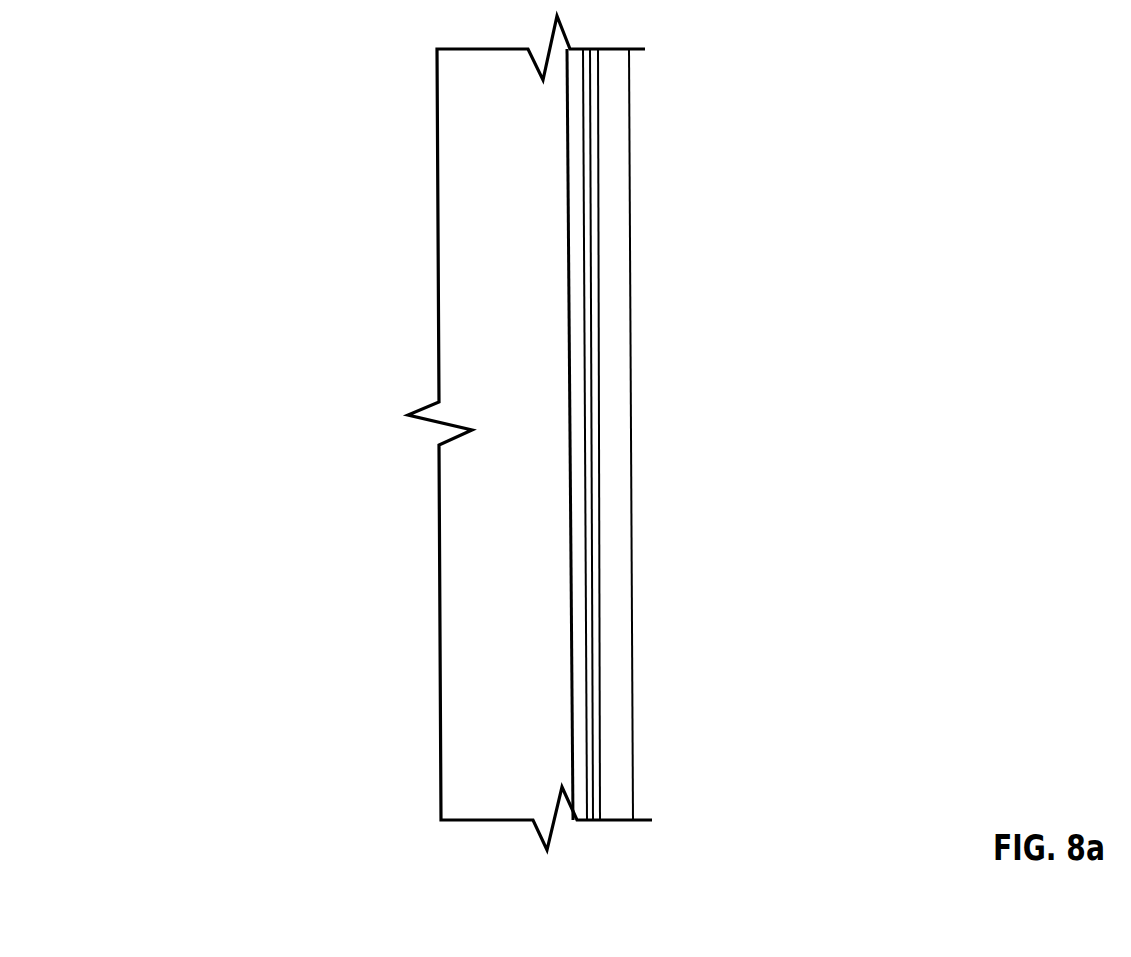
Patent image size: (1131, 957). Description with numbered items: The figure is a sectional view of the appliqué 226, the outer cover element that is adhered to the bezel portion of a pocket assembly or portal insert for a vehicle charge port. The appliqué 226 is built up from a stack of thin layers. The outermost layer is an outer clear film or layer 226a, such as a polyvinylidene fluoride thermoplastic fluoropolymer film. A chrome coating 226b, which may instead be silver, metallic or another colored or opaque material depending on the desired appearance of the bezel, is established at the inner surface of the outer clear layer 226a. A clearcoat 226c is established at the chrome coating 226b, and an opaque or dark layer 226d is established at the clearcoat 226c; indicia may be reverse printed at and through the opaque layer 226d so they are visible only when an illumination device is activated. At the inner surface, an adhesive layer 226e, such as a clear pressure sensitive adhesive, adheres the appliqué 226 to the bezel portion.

The appliqué 226 is at (370, 315).
The outer clear film or layer 226a is at (535, 203).
The chrome coating 226b is at (595, 292).
The clearcoat 226c is at (604, 387).
The opaque layer 226d is at (612, 513).
The adhesive layer 226e is at (636, 607).